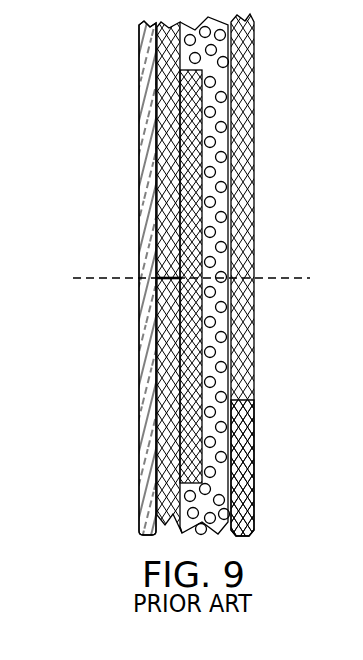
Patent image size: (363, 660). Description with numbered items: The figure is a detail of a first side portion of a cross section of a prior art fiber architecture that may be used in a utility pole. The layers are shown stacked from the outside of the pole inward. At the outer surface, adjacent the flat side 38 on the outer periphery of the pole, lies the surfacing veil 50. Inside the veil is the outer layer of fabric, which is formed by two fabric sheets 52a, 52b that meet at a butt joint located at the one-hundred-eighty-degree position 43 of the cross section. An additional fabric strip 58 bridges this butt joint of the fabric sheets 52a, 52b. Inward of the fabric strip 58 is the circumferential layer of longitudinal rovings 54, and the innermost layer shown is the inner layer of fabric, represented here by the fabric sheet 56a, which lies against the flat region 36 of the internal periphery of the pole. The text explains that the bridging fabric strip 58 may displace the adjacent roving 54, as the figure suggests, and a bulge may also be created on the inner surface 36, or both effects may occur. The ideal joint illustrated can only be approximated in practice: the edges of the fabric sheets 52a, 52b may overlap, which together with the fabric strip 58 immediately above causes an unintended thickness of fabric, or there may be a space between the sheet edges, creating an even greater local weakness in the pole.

The flat region 36 is at (255, 125).
The flat side 38 is at (140, 232).
The 180° position 43 is at (88, 280).
The surfacing veil 50 is at (139, 373).
The fabric sheet 52a is at (175, 60).
The fabric sheet 52b is at (157, 467).
The circumferential layer of longitudinal rovings 54 is at (213, 382).
The fabric sheet 56a is at (243, 457).
The fabric strip 58 is at (183, 280).